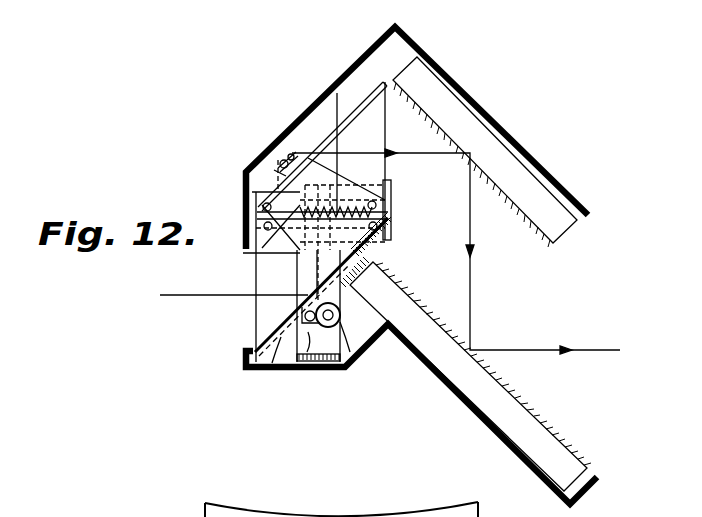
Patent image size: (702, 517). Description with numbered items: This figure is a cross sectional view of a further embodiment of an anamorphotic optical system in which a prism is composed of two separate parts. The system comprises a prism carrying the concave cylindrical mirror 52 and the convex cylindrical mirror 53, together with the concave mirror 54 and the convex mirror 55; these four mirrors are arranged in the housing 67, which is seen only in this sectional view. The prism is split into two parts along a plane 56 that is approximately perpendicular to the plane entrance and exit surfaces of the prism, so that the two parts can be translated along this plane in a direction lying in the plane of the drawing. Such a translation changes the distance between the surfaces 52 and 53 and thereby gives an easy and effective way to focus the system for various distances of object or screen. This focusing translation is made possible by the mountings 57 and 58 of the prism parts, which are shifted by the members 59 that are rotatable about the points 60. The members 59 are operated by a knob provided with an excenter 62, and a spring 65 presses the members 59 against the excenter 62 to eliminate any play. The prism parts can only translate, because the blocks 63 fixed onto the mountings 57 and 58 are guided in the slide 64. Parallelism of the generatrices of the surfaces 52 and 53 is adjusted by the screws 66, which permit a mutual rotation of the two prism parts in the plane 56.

The concave cylindrical mirror 52 is at (270, 370).
The convex cylindrical mirror 53 is at (359, 97).
The concave mirror 54 is at (517, 192).
The convex mirror 55 is at (546, 427).
The plane 56 is at (250, 213).
The mounting 57 is at (283, 166).
The mounting 58 is at (341, 313).
The member 59 is at (311, 366).
The point 60 is at (255, 198).
The excenter 62 is at (352, 359).
The block 63 is at (385, 222).
The slide 64 is at (390, 249).
The spring 65 is at (292, 237).
The screw 66 is at (256, 232).
The housing 67 is at (409, 35).